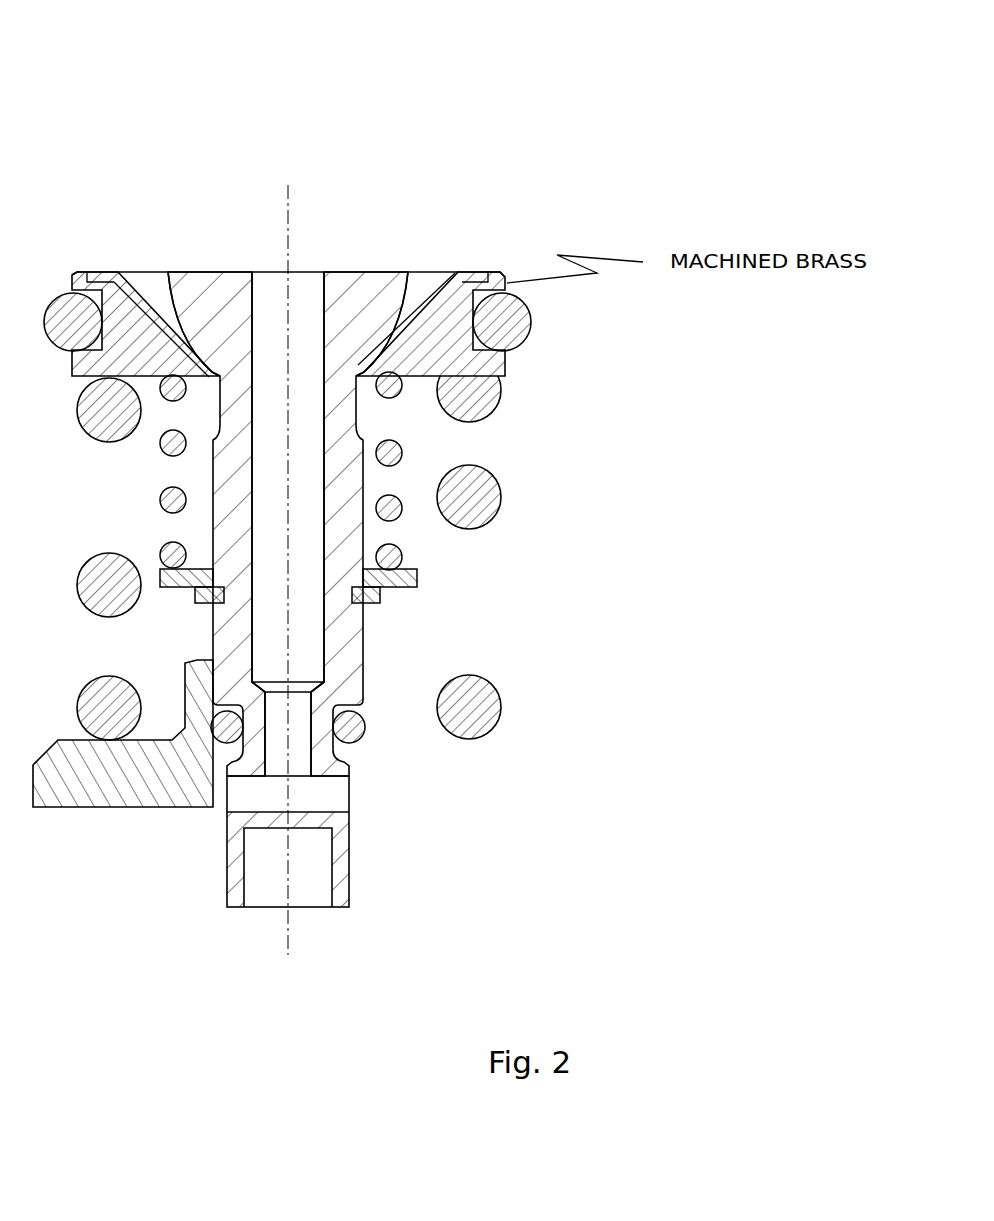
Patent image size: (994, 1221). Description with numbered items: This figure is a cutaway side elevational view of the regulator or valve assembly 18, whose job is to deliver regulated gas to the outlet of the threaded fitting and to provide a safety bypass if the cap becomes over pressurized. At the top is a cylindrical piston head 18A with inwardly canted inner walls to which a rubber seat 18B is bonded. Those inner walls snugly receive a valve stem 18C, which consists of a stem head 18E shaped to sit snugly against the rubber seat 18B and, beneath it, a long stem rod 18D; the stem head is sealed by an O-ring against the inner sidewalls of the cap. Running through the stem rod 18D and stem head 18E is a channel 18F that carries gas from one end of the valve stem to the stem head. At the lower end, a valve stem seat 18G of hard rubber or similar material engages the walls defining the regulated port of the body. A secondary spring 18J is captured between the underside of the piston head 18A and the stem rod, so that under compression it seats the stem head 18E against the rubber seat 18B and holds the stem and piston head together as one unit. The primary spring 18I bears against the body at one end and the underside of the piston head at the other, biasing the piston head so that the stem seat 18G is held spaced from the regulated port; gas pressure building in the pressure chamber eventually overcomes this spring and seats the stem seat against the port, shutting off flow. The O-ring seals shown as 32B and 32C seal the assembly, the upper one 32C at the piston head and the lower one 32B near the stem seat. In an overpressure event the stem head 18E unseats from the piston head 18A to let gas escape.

The regulator or valve assembly 18 is at (285, 489).
The piston head 18A is at (394, 335).
The rubber seat 18B is at (336, 271).
The valve stem 18C is at (378, 593).
The stem rod 18D is at (411, 524).
The stem head 18E is at (329, 220).
The channel 18F is at (423, 524).
The valve stem seat 18G is at (447, 855).
The primary spring 18I is at (367, 549).
The secondary spring 18J is at (349, 471).
The lower O-ring 32B is at (419, 761).
The upper O-ring 32C is at (372, 322).